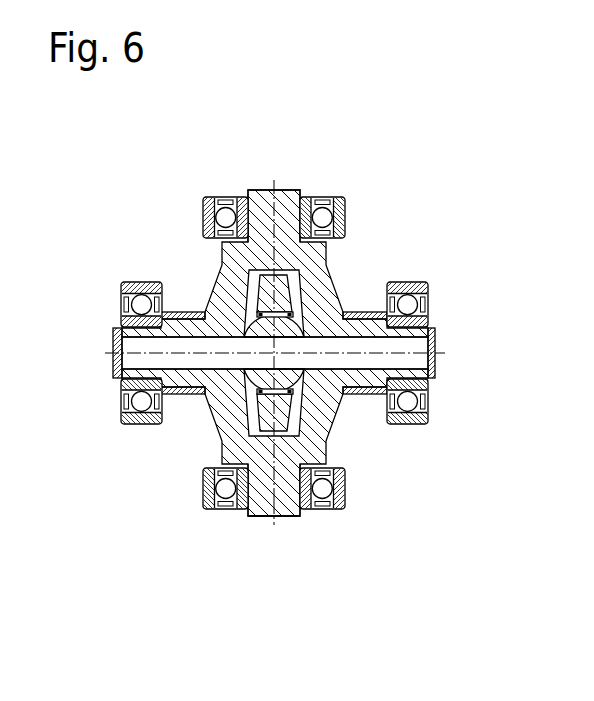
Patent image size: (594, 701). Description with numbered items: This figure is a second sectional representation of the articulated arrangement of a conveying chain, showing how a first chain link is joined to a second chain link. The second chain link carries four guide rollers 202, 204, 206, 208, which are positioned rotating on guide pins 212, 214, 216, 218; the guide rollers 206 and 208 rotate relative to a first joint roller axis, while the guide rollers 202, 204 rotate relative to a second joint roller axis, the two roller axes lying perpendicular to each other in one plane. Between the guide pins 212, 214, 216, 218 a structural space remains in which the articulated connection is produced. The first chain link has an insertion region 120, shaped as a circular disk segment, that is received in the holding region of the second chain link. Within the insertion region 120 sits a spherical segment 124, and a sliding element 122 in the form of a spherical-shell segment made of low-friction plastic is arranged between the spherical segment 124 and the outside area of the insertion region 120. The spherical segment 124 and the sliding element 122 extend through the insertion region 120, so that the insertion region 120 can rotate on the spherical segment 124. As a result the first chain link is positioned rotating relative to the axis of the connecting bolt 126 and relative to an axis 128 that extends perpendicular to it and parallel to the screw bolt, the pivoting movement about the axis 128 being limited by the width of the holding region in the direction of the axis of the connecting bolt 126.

The insertion region 120 is at (285, 293).
The sliding element 122 is at (290, 390).
The spherical segment 124 is at (237, 391).
The connecting bolt 126 is at (410, 353).
The axis 128 is at (278, 503).
The guide roller 202 is at (427, 422).
The guide roller 204 is at (122, 287).
The guide roller 206 is at (345, 508).
The guide roller 208 is at (340, 198).
The guide pin 212 is at (433, 378).
The guide pin 214 is at (113, 382).
The guide pin 216 is at (252, 507).
The guide pin 218 is at (285, 200).